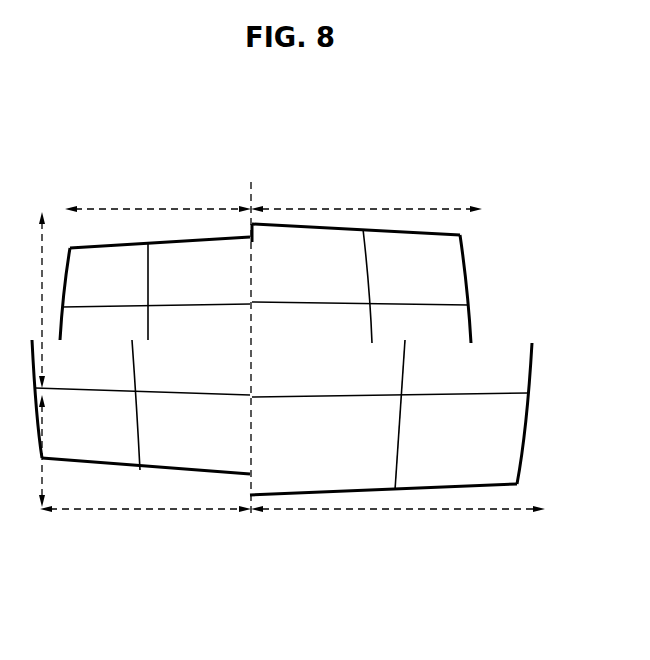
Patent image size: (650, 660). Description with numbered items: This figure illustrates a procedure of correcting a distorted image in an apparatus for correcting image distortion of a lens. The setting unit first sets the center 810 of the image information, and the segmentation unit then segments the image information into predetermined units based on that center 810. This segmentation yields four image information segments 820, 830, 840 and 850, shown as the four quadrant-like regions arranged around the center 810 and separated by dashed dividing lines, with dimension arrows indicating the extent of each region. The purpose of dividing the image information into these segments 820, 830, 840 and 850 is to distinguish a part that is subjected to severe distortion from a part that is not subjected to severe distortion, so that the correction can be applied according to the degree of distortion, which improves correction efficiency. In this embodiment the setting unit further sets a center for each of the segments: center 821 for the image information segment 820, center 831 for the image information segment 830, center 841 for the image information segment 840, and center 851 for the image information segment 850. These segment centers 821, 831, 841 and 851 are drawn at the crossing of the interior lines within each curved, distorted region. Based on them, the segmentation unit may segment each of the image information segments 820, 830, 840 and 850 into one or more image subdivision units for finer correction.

The center 810 is at (243, 342).
The image information segment 820 is at (330, 225).
The center of image information segment 821 is at (372, 303).
The image information segment 830 is at (113, 243).
The center of image information segment 831 is at (148, 305).
The image information segment 840 is at (105, 468).
The center of image information segment 841 is at (135, 423).
The image information segment 850 is at (490, 487).
The center of image information segment 851 is at (405, 398).